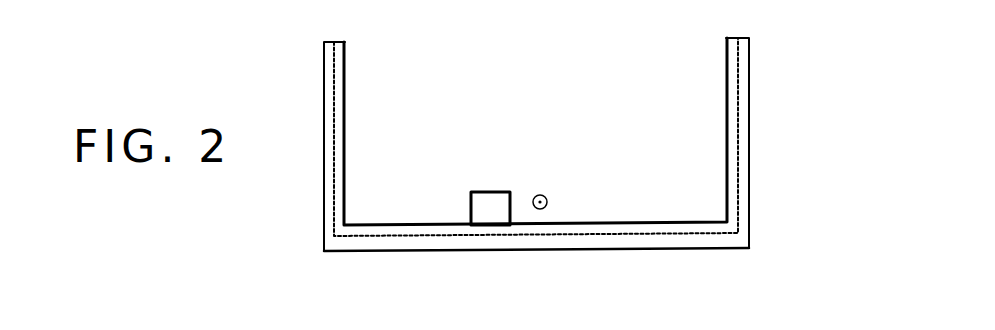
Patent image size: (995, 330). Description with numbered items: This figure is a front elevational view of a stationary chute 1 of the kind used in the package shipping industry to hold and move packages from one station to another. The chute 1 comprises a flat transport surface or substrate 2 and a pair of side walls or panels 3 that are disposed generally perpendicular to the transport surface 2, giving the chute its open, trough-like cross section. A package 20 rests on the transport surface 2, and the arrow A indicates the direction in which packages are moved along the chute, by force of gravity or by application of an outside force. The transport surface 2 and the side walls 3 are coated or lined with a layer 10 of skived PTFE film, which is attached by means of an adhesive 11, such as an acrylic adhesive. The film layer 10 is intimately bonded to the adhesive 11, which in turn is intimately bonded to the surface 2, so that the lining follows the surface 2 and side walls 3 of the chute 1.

The stationary chute 1 is at (537, 104).
The transport surface 2 is at (515, 243).
The side walls 3 is at (322, 85).
The layer of skived PTFE film 10 is at (343, 73).
The acrylic adhesive 11 is at (337, 123).
The package 20 is at (490, 200).
The arrow A is at (545, 195).